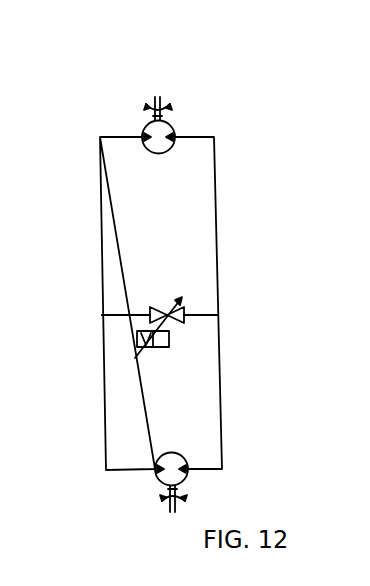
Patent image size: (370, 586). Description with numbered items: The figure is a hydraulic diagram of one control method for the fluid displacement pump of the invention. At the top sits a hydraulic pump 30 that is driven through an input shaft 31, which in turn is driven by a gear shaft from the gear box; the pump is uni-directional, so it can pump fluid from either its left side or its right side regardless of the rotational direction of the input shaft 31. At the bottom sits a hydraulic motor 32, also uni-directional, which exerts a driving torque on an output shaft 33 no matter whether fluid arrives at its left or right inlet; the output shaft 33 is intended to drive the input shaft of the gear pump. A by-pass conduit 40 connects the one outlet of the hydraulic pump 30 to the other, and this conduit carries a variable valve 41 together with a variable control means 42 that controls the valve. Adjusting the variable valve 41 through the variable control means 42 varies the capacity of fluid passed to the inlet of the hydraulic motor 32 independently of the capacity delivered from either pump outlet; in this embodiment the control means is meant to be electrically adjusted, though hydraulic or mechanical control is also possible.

The hydraulic pump 30 is at (175, 123).
The input shaft 31 is at (152, 103).
The hydraulic motor 32 is at (185, 481).
The output shaft 33 is at (167, 502).
The by-pass conduit 40 is at (128, 315).
The variable valve 41 is at (193, 305).
The variable control means 42 is at (128, 342).